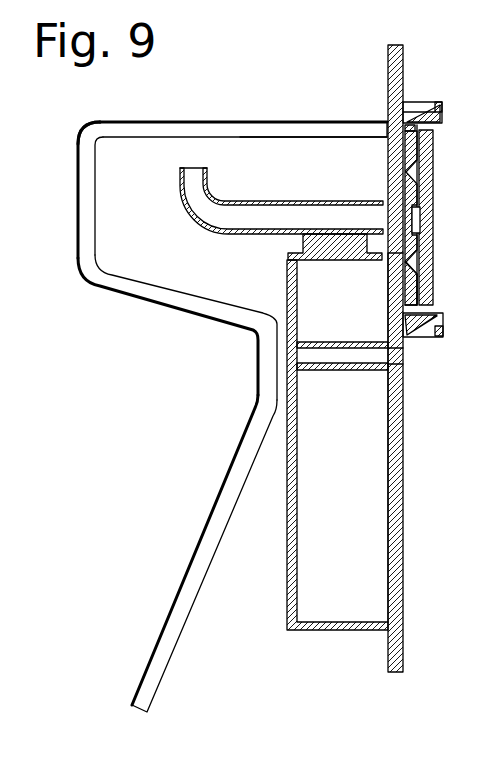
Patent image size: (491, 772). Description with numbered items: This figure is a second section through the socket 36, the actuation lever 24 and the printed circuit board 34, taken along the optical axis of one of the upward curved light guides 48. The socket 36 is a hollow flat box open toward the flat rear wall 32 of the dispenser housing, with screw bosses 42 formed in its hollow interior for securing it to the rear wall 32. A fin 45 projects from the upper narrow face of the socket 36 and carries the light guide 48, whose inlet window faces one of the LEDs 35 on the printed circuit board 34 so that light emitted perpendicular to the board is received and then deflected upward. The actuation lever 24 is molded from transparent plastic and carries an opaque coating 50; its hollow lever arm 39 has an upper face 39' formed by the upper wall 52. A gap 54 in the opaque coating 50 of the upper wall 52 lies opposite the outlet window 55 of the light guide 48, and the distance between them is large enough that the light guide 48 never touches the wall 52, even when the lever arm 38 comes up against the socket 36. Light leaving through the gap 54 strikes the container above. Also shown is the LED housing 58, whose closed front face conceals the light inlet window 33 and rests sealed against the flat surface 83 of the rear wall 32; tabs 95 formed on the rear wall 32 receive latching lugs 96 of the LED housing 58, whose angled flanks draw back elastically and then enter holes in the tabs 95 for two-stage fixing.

The actuation lever 24 is at (113, 370).
The rear wall 32 is at (0, 410).
The light inlet window 33 is at (400, 185).
The printed circuit board 34 is at (425, 148).
The LED 35 is at (416, 218).
The socket 36 is at (315, 545).
The first lever arm 38 is at (193, 595).
The lever arm 39 is at (202, 397).
The upper face of lever arm 39' is at (92, 113).
The screw boss 42 is at (347, 354).
The fin 45 is at (325, 240).
The light guide 48 is at (220, 205).
The opaque coating 50 is at (78, 218).
The upper wall 52 is at (283, 128).
The gap 54 is at (187, 128).
The outlet window 55 is at (193, 170).
The LED housing 58 is at (407, 288).
The flat surface 83 is at (393, 270).
The tab 95 is at (442, 100).
The latching lug 96 is at (427, 110).